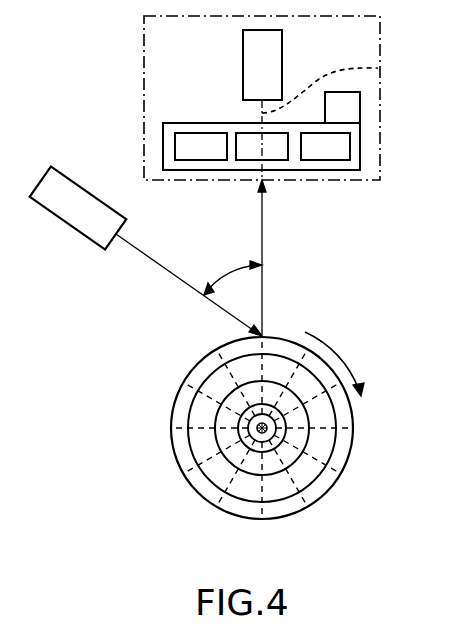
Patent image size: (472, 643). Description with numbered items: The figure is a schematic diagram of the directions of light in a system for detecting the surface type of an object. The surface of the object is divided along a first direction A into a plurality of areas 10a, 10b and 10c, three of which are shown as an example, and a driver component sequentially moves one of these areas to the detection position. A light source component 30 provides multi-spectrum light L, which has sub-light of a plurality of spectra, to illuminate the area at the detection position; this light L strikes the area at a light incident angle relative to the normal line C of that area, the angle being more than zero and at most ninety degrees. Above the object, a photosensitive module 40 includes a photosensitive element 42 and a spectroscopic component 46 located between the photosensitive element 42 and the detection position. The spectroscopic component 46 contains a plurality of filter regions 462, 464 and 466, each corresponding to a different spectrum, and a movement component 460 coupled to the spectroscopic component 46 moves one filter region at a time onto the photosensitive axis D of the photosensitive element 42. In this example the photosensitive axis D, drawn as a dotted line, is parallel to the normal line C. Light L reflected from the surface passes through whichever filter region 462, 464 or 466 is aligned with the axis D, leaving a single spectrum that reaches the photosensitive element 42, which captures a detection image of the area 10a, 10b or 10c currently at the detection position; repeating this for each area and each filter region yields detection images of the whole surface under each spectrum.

The photosensitive module 40 is at (372, 182).
The photosensitive element 42 is at (282, 46).
The photosensitive axis D is at (378, 68).
The movement component 460 is at (360, 105).
The spectroscopic component 46 is at (360, 148).
The filter region 462 is at (186, 160).
The filter region 464 is at (240, 160).
The filter region 466 is at (321, 160).
The normal line C is at (262, 246).
The light source component 30 is at (85, 196).
The light L is at (150, 258).
The area 10a is at (192, 362).
The area 10b is at (168, 458).
The area 10c is at (190, 498).
The first direction A is at (339, 379).